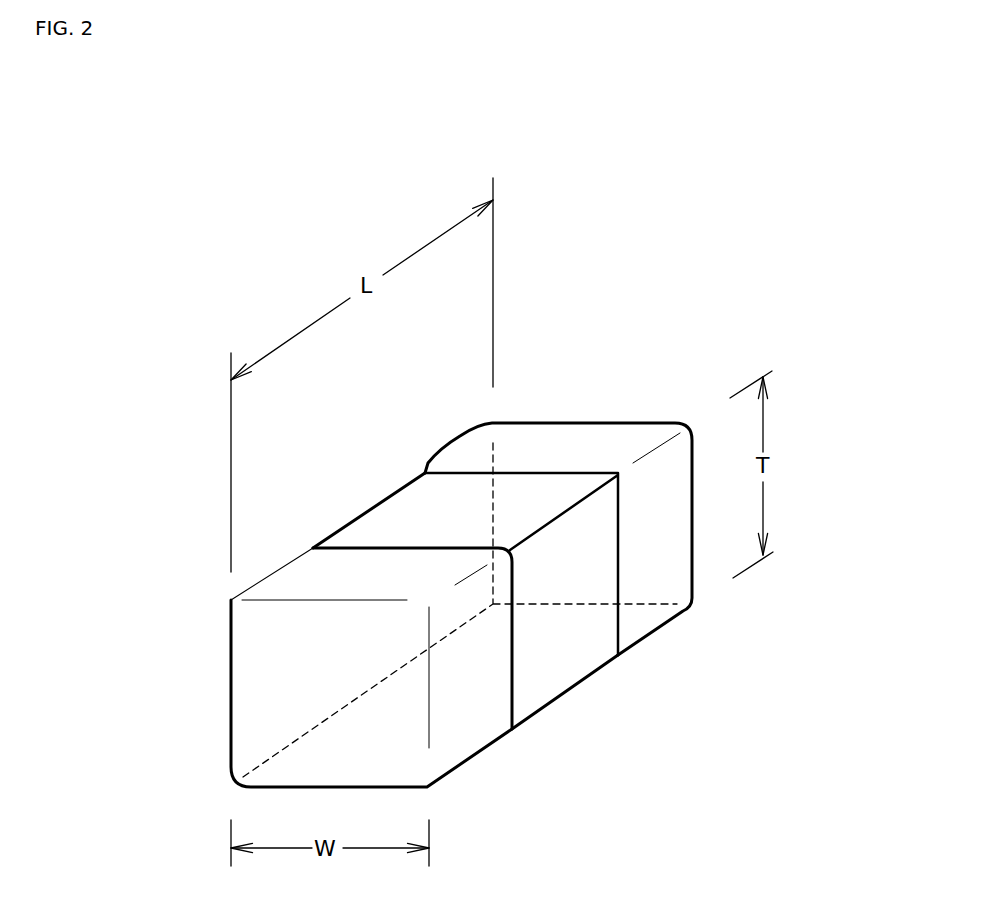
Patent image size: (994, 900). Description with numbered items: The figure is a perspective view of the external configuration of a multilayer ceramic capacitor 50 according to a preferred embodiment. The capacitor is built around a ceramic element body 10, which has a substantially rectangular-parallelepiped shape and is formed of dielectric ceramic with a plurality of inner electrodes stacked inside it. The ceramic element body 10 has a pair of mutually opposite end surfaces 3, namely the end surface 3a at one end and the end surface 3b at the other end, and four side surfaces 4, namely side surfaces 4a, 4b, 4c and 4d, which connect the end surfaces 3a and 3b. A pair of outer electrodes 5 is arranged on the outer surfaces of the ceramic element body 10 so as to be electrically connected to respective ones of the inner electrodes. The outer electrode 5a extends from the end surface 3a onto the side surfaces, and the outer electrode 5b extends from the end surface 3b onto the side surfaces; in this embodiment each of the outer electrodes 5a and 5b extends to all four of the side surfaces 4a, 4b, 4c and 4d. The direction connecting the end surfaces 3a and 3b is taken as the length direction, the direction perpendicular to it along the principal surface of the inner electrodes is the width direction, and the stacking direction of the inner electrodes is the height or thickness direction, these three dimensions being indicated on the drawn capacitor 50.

The multilayer ceramic capacitor 50 is at (543, 340).
The ceramic element body 10 is at (575, 680).
The end surfaces 3 is at (384, 554).
The end surface 3a is at (280, 702).
The end surface 3b is at (598, 457).
The side surfaces 4 is at (502, 606).
The side surface 4a is at (382, 535).
The side surface 4b is at (563, 622).
The side surface 4c is at (528, 680).
The side surface 4d is at (421, 514).
The outer electrodes 5 is at (642, 659).
The outer electrode 5a is at (450, 713).
The outer electrode 5b is at (663, 555).